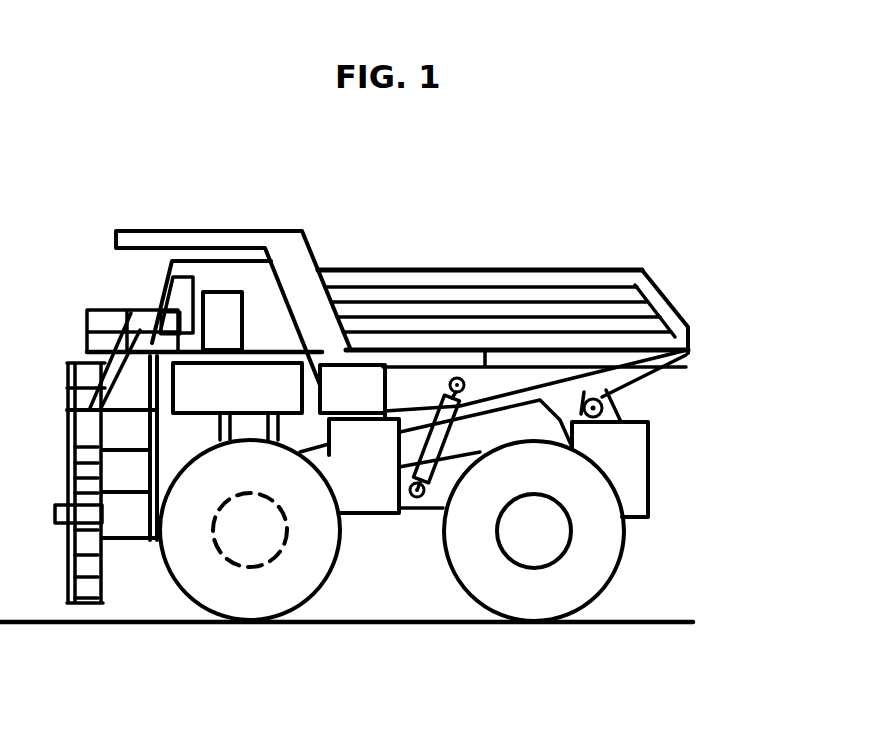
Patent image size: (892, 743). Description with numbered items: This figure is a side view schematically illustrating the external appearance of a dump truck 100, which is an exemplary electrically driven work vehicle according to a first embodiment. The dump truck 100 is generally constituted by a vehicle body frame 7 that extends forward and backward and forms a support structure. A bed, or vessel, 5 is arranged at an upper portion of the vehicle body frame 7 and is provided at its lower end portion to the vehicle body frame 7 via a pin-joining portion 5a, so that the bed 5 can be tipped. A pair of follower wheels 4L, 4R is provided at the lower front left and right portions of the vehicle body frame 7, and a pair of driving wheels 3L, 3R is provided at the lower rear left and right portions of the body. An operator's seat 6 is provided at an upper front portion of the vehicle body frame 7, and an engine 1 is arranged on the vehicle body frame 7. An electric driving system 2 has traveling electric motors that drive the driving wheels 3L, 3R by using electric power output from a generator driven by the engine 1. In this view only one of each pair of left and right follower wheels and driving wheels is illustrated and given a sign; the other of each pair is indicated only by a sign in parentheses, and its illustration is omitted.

The dump truck 100 is at (171, 188).
The engine 1 is at (261, 383).
The electric driving system 2 is at (537, 515).
The driving wheel 3L is at (534, 583).
The driving wheel 3R is at (535, 603).
The follower wheel 4L is at (250, 583).
The follower wheel 4R is at (257, 603).
The bed (vessel) 5 is at (618, 268).
The pin-joining portion 5a is at (618, 403).
The operator's seat 6 is at (172, 297).
The vehicle body frame 7 is at (183, 442).